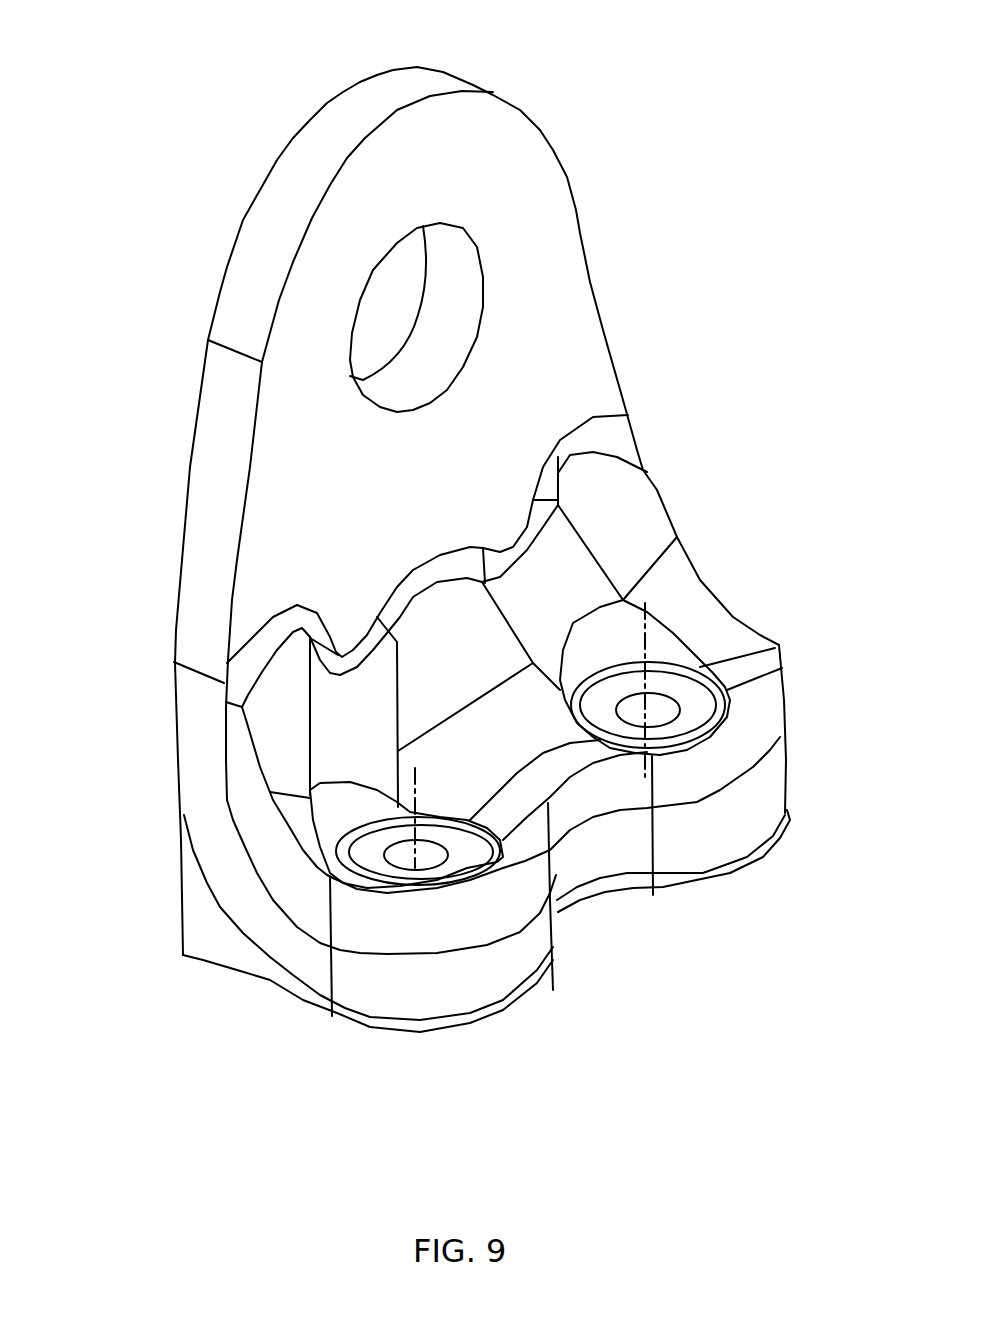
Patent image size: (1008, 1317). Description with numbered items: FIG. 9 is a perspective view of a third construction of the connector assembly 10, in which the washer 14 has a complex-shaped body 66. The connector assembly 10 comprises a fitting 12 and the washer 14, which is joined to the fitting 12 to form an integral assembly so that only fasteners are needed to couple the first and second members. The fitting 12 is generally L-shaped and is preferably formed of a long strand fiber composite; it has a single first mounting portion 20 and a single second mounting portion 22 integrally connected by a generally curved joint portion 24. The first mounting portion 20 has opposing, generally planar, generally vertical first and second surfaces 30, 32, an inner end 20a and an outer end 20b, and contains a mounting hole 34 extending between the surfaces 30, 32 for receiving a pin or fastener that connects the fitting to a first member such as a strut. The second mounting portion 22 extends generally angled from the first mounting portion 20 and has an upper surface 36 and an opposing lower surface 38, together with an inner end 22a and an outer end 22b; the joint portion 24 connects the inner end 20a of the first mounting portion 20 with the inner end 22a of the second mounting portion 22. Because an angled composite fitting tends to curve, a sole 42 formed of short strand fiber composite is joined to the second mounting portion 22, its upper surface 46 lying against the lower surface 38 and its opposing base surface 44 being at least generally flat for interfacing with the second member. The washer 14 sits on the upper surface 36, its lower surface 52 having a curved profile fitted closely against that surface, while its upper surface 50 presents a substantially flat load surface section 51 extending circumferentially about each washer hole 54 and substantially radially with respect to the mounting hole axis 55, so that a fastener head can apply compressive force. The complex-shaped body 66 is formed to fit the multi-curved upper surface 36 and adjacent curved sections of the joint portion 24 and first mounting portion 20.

The connector assembly 10 is at (804, 246).
The fitting 12 is at (128, 496).
The washer 14 is at (723, 571).
The first mounting portion 20 is at (208, 379).
The inner end of first mounting portion 20a is at (197, 770).
The outer end of first mounting portion 20b is at (374, 92).
The second mounting portion 22 is at (766, 828).
The inner end of second mounting portion 22a is at (200, 827).
The outer end of second mounting portion 22b is at (587, 873).
The joint portion 24 is at (204, 800).
The first surface of first mounting portion 30 is at (553, 270).
The second surface of first mounting portion 32 is at (245, 216).
The mounting hole 34 is at (462, 267).
The upper surface of second mounting portion 36 is at (512, 930).
The lower surface of second mounting portion 38 is at (239, 933).
The sole 42 is at (498, 1028).
The base surface 44 is at (267, 990).
The upper surface of sole 46 is at (222, 882).
The washer upper surface 50 is at (673, 593).
The load surface section 51 is at (698, 700).
The washer lower surface 52 is at (388, 953).
The washer hole 54 is at (624, 723).
The mounting hole axis 55 is at (645, 622).
The complex-shaped body 66 is at (767, 722).